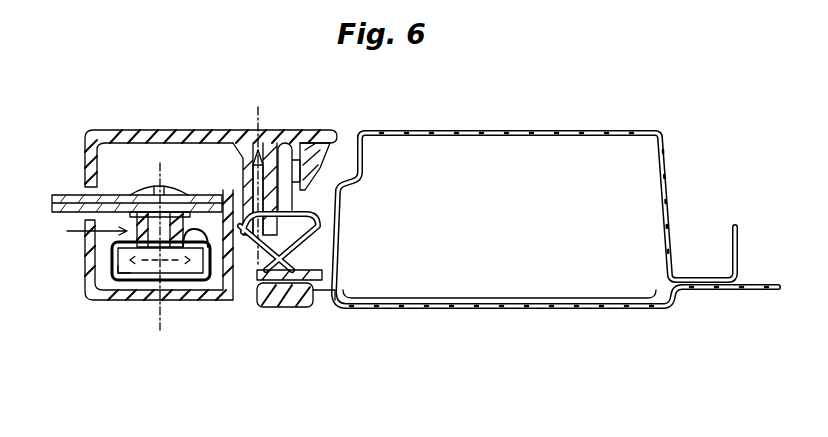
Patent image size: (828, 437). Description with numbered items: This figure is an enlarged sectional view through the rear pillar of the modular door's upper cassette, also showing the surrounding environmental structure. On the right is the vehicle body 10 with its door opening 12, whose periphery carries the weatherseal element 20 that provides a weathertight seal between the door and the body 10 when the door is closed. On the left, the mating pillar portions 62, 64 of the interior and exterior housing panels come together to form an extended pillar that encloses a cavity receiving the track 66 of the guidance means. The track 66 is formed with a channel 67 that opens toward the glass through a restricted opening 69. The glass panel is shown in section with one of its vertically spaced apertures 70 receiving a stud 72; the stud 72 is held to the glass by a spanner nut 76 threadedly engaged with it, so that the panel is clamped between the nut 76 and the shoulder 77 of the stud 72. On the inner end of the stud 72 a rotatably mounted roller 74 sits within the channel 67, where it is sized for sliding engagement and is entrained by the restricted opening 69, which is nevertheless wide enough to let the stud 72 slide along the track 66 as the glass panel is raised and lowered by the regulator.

The vehicle body 10 is at (462, 126).
The door opening 12 is at (346, 172).
The weatherseal element 20 is at (306, 210).
The pillar portion 62 is at (87, 262).
The pillar portion 64 is at (152, 131).
The track 66 is at (140, 281).
The channel 67 is at (129, 276).
The restricted opening 69 is at (205, 256).
The aperture 70 is at (143, 191).
The stud 72 is at (138, 221).
The roller 74 is at (194, 272).
The spanner nut 76 is at (172, 186).
The shoulder 77 is at (83, 228).